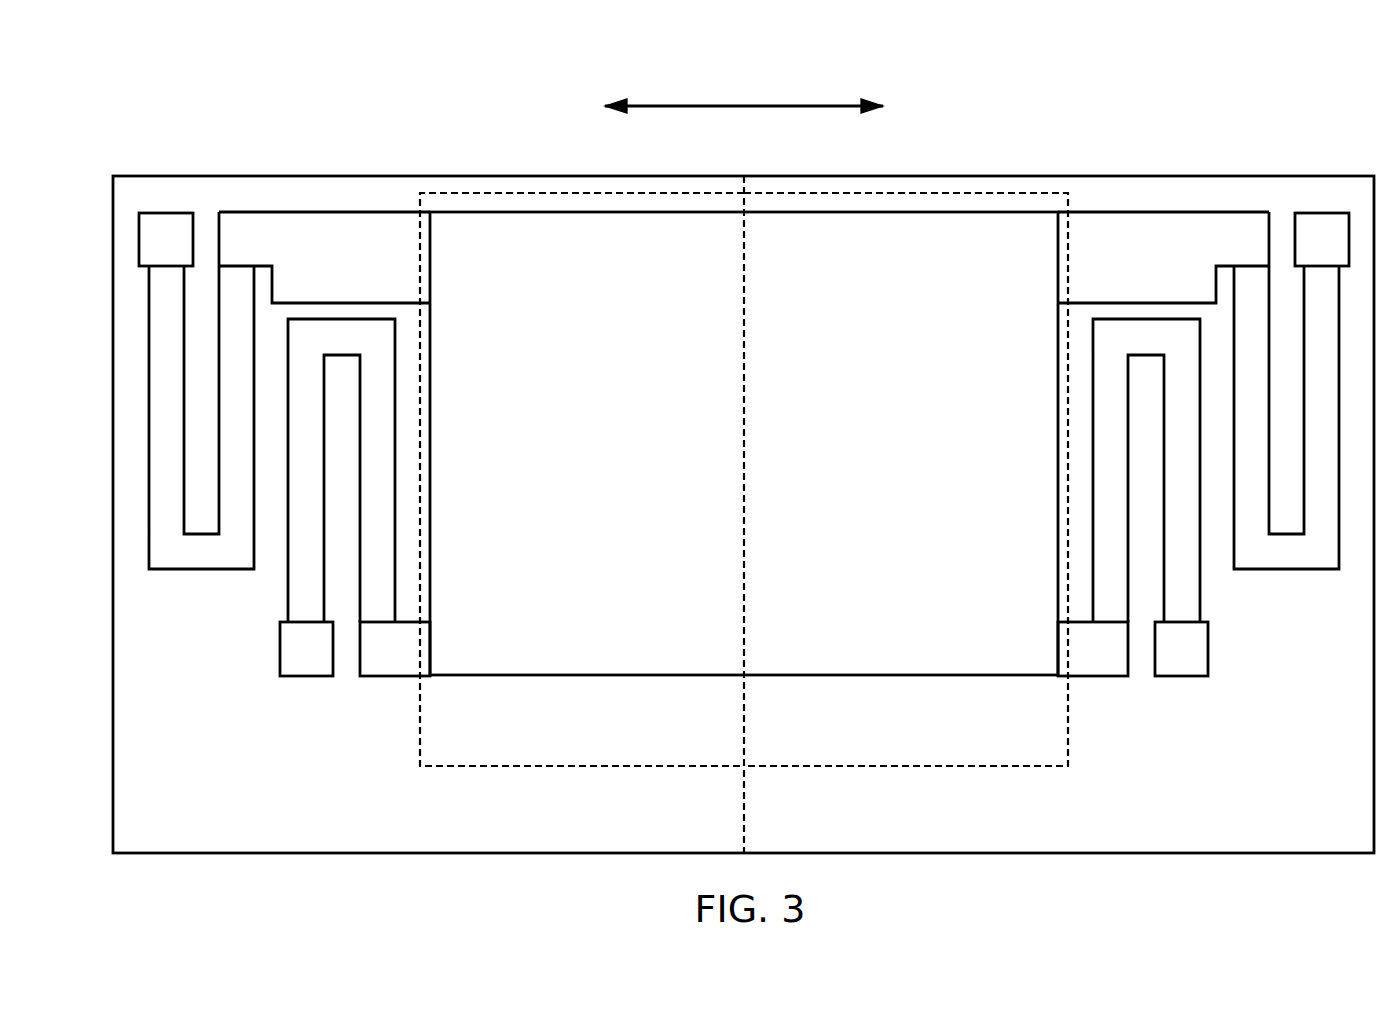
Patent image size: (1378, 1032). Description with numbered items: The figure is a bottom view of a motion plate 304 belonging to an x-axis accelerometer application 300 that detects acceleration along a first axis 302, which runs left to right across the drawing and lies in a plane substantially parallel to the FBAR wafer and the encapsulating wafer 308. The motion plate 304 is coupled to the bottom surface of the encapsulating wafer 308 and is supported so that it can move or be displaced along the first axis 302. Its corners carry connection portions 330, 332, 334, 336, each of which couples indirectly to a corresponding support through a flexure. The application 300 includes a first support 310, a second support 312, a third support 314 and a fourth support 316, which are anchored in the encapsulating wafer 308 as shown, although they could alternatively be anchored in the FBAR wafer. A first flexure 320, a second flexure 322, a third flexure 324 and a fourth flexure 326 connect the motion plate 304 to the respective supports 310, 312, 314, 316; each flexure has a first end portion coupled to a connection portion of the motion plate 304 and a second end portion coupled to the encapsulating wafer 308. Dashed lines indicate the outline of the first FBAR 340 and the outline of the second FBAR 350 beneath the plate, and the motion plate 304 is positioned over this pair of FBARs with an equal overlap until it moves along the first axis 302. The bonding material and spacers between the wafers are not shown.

The x-axis accelerometer application 300 is at (485, 145).
The first axis 302 is at (744, 90).
The motion plate 304 is at (657, 550).
The encapsulating wafer 308 is at (1096, 176).
The first support 310 is at (165, 213).
The second support 312 is at (1320, 213).
The third support 314 is at (305, 676).
The fourth support 316 is at (1185, 676).
The first flexure 320 is at (200, 569).
The second flexure 322 is at (1285, 569).
The third flexure 324 is at (375, 410).
The fourth flexure 326 is at (1112, 408).
The connection portion 330 is at (311, 267).
The connection portion 332 is at (1125, 267).
The connection portion 334 is at (372, 662).
The connection portion 336 is at (1072, 662).
The outline of first FBAR 340 is at (675, 748).
The outline of second FBAR 350 is at (1013, 748).